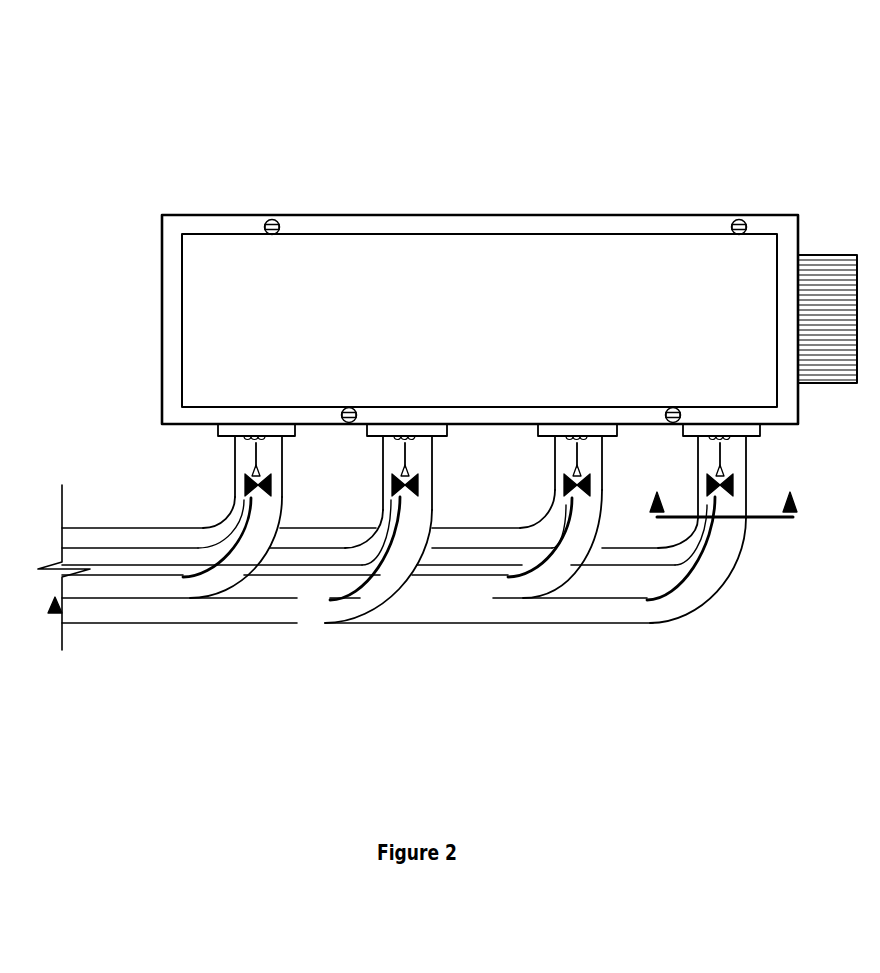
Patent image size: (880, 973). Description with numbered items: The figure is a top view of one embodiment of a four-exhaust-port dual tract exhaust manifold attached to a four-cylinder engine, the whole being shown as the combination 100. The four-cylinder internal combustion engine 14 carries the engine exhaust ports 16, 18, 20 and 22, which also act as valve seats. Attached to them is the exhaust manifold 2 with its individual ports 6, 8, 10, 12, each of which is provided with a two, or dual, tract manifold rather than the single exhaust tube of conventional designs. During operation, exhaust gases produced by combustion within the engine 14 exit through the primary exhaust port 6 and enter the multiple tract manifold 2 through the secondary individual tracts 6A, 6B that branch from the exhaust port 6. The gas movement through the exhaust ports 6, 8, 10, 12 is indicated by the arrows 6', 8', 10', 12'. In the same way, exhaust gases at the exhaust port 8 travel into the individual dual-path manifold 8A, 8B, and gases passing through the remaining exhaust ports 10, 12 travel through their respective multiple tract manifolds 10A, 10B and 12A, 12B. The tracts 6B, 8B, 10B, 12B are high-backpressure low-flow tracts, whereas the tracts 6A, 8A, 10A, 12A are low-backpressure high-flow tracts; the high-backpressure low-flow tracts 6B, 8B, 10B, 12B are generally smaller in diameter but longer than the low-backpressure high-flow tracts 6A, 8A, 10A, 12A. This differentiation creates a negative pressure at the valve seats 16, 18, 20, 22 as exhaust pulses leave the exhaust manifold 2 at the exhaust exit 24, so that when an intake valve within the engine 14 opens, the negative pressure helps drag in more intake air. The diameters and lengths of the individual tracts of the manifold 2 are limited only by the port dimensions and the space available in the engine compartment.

The combination 100 is at (447, 385).
The 4-cylinder internal combustion engine 14 is at (509, 300).
The exhaust manifold 2 is at (439, 544).
The exhaust exit 24 is at (82, 662).
The exhaust port 12 is at (190, 507).
The exhaust port 10 is at (390, 518).
The exhaust port 8 is at (558, 523).
The primary exhaust port 6 is at (744, 494).
The engine exhaust port 22 is at (274, 372).
The engine exhaust port 20 is at (427, 386).
The engine exhaust port 18 is at (556, 369).
The engine exhaust port 16 is at (702, 371).
The arrow 12' is at (204, 464).
The arrow 10' is at (441, 467).
The arrow 8' is at (606, 469).
The arrow 6' is at (765, 469).
The low-backpressure high-flow tract 12A is at (224, 589).
The low-backpressure high-flow tract 10A is at (364, 607).
The low-backpressure high-flow tract 8A is at (580, 582).
The low-backpressure high-flow tract 6A is at (745, 570).
The high-backpressure low-flow tract 12B is at (168, 520).
The high-backpressure low-flow tract 10B is at (345, 542).
The high-backpressure low-flow tract 8B is at (520, 531).
The high-backpressure low-flow tract 6B is at (696, 576).